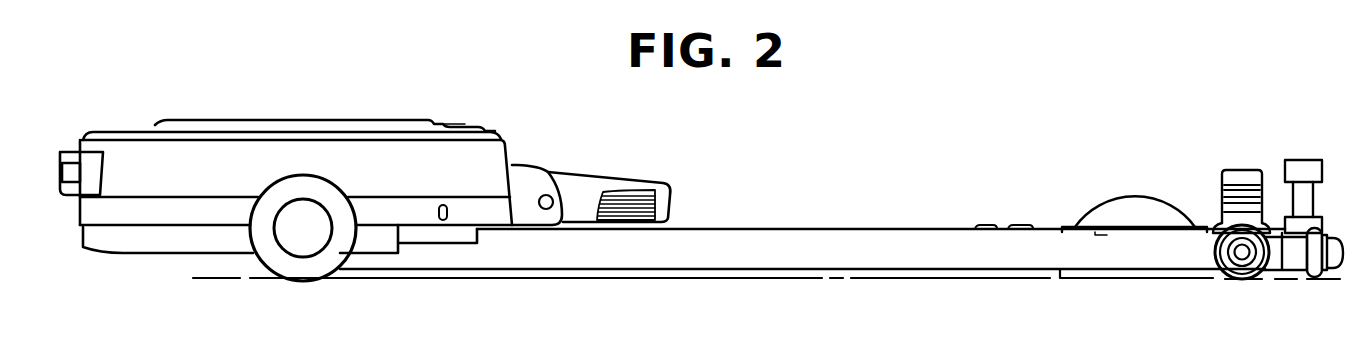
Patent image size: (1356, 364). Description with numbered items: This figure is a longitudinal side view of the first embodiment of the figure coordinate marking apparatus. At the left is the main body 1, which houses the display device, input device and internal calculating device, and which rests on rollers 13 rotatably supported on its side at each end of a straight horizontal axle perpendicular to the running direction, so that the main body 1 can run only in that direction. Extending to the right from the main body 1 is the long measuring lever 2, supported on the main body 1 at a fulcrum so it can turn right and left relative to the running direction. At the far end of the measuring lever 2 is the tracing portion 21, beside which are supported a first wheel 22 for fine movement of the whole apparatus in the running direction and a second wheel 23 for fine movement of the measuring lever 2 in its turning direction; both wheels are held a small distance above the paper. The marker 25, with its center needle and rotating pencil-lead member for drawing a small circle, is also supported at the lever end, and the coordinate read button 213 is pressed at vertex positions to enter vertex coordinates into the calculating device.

The main body 1 is at (509, 153).
The measuring lever 2 is at (782, 229).
The rollers 13 is at (262, 262).
The tracing portion 21 is at (1107, 200).
The first wheel 22 is at (1257, 283).
The second wheel 23 is at (1338, 272).
The marker 25 is at (1305, 160).
The coordinate read button 213 is at (1240, 170).